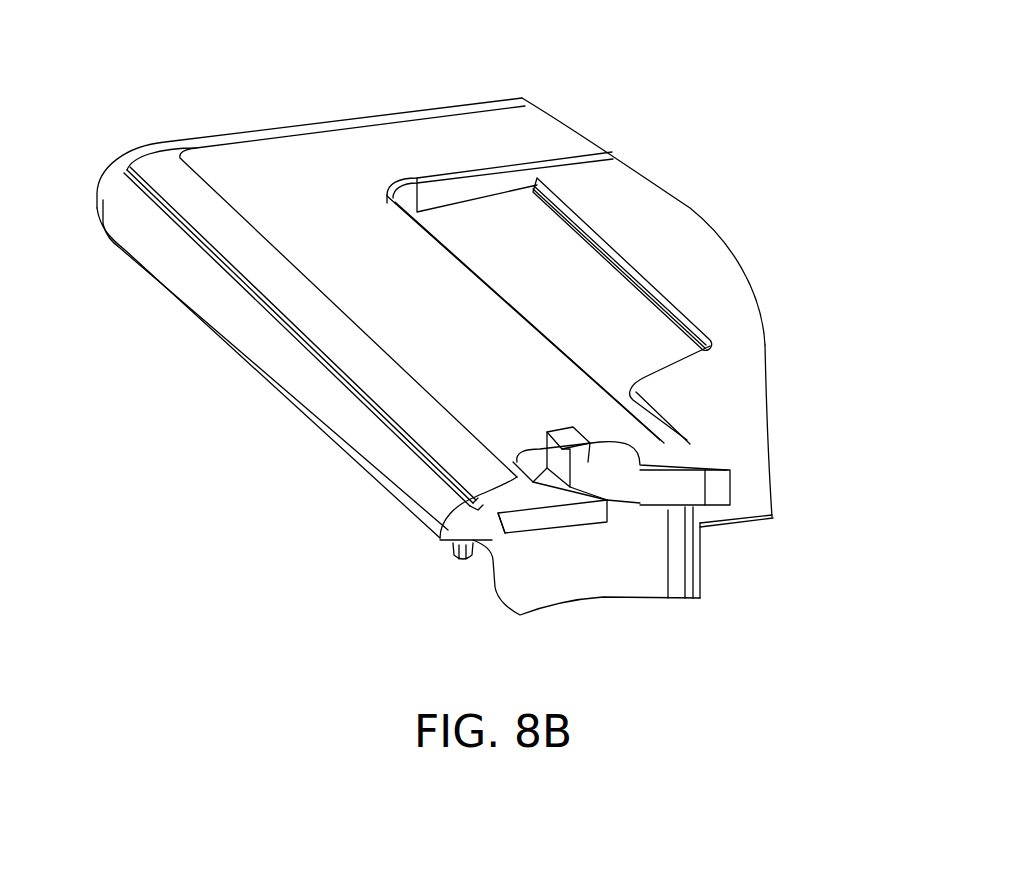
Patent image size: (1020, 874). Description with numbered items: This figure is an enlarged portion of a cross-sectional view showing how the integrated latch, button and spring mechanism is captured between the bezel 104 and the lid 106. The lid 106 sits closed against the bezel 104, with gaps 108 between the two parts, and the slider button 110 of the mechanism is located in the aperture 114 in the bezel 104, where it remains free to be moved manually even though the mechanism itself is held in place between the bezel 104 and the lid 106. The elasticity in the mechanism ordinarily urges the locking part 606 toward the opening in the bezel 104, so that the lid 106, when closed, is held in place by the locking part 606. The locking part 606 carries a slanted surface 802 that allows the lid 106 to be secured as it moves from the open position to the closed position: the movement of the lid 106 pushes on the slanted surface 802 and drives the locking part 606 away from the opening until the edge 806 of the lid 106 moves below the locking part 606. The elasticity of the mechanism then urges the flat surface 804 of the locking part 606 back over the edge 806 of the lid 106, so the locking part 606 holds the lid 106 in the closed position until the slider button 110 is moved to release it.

The bezel 104 is at (552, 114).
The lid 106 is at (737, 258).
The gaps 108 is at (545, 277).
The slider button 110 is at (578, 440).
The aperture 114 is at (500, 517).
The locking part 606 is at (703, 523).
The slanted surface 802 is at (703, 490).
The flat surface 804 is at (660, 505).
The edge 806 is at (707, 470).